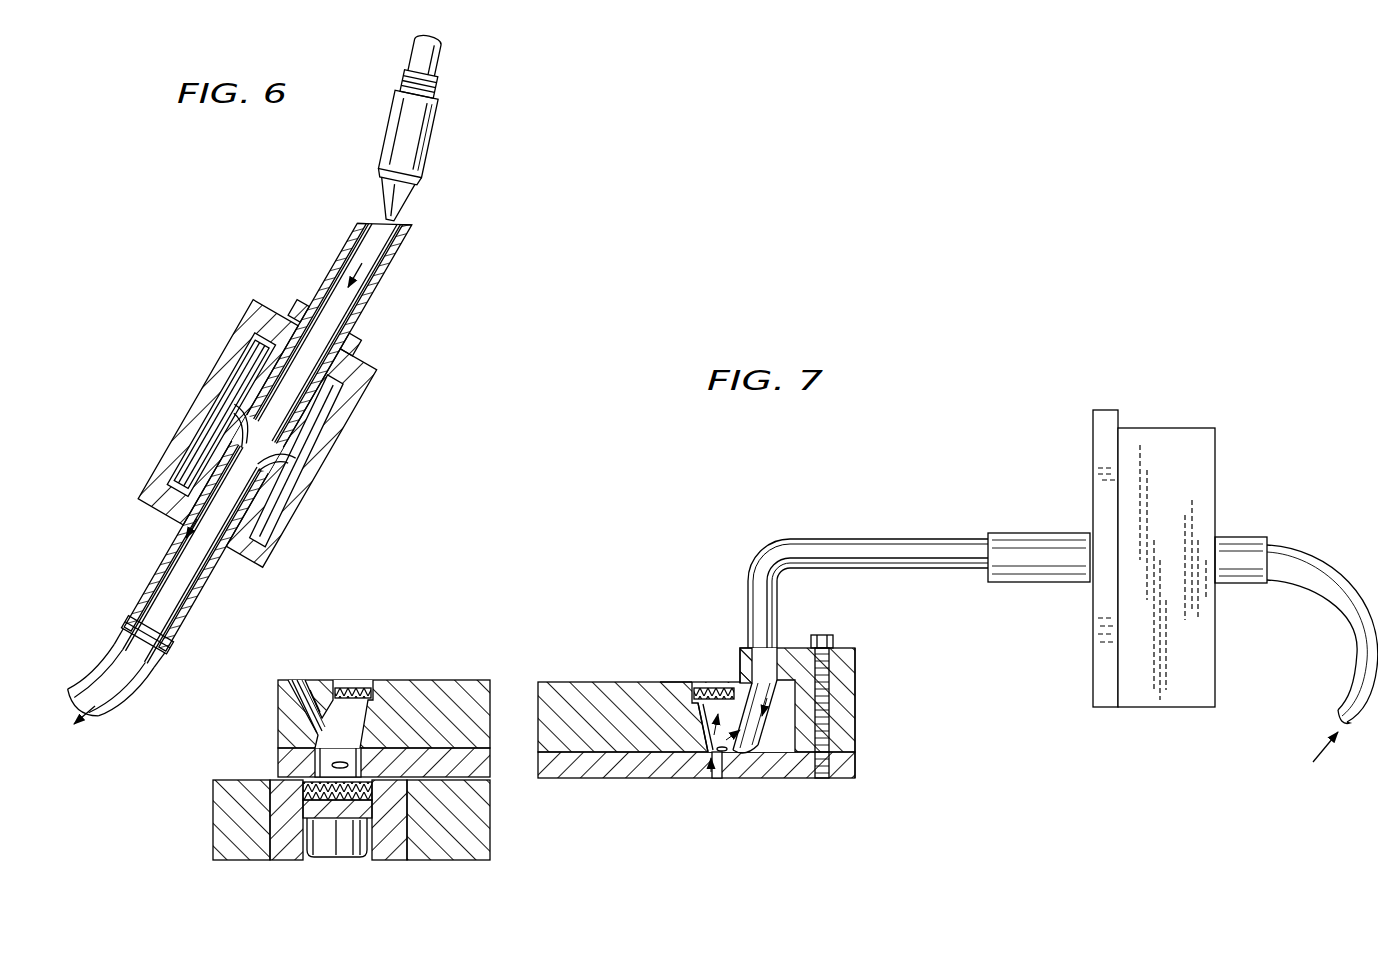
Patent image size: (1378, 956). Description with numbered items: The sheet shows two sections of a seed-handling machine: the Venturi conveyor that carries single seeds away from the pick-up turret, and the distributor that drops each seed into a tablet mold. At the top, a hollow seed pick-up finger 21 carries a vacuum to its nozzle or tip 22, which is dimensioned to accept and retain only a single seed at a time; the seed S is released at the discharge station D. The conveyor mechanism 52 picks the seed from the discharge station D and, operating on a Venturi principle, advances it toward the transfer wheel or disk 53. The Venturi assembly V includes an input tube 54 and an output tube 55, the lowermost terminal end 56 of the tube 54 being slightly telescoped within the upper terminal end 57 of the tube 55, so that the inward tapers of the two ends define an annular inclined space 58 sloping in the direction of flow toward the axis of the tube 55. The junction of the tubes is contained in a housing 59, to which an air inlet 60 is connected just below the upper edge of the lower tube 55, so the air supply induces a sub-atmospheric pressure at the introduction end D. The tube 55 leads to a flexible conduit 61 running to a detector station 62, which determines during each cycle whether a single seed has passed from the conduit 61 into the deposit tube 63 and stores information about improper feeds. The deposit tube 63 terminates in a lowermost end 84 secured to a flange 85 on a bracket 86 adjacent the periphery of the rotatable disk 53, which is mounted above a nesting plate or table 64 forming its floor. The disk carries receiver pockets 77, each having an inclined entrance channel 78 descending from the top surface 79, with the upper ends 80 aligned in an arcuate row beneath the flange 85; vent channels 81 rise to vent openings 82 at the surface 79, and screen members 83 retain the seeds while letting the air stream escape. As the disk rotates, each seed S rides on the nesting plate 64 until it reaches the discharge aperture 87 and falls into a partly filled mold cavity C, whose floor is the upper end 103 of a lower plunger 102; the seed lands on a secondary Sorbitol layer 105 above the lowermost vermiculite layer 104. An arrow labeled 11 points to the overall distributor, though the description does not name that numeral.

In FIG. 7, the dispensing system 11 is at (620, 545).
In FIG. 6, the seed pick-up fingers 21 is at (441, 54).
In FIG. 6, the nozzle or tip 22 is at (432, 138).
In FIG. 6, the conveyor mechanism 52 is at (207, 335).
In FIG. 7, the transfer wheel or disk 53 is at (655, 677).
In FIG. 6, the input tube 54 is at (322, 283).
In FIG. 6, the output tube 55 is at (195, 585).
In FIG. 6, the lowermost or terminal end 56 is at (300, 467).
In FIG. 6, the upper terminal end 57 is at (262, 442).
In FIG. 6, the annular inclined space 58 is at (247, 407).
In FIG. 6, the housing 59 is at (283, 312).
In FIG. 6, the air inlet 60 is at (303, 510).
In FIG. 6, the flexible conduit 61 is at (118, 695).
In FIG. 7, the flexible conduit 61 is at (1323, 548).
In FIG. 7, the detector station 62 is at (1177, 700).
In FIG. 7, the deposit tube 63 is at (915, 542).
In FIG. 7, the nesting plate or table 64 is at (755, 780).
In FIG. 6, the receiver pockets 77 is at (325, 730).
In FIG. 7, the receiver pockets 77 is at (712, 752).
In FIG. 6, the inclined entrance channel portion 78 is at (303, 684).
In FIG. 7, the inclined entrance channel portion 78 is at (770, 737).
In FIG. 7, the top surface 79 is at (682, 680).
In FIG. 7, the upper ends 80 is at (750, 672).
In FIG. 6, the vent channels 81 is at (358, 716).
In FIG. 7, the vent channels 81 is at (700, 727).
In FIG. 6, the vent openings 82 is at (353, 693).
In FIG. 7, the vent openings 82 is at (703, 687).
In FIG. 7, the screen members 83 is at (698, 703).
In FIG. 7, the lowermost terminal end 84 is at (790, 672).
In FIG. 7, the flange 85 is at (829, 675).
In FIG. 7, the bracket 86 is at (855, 735).
In FIG. 6, the discharge aperture 87 is at (303, 760).
In FIG. 6, the lower plungers 102 is at (333, 848).
In FIG. 6, the upper end 103 is at (303, 807).
In FIG. 6, the lowermost vermiculite layer 104 is at (440, 860).
In FIG. 6, the secondary layer 105 is at (362, 720).
In FIG. 6, the seed S is at (385, 214).
In FIG. 7, the seed S is at (733, 753).
In FIG. 6, the discharge station D is at (412, 223).
In FIG. 6, the Venturi assembly V is at (148, 473).
In FIG. 6, the mold cavity C is at (303, 790).